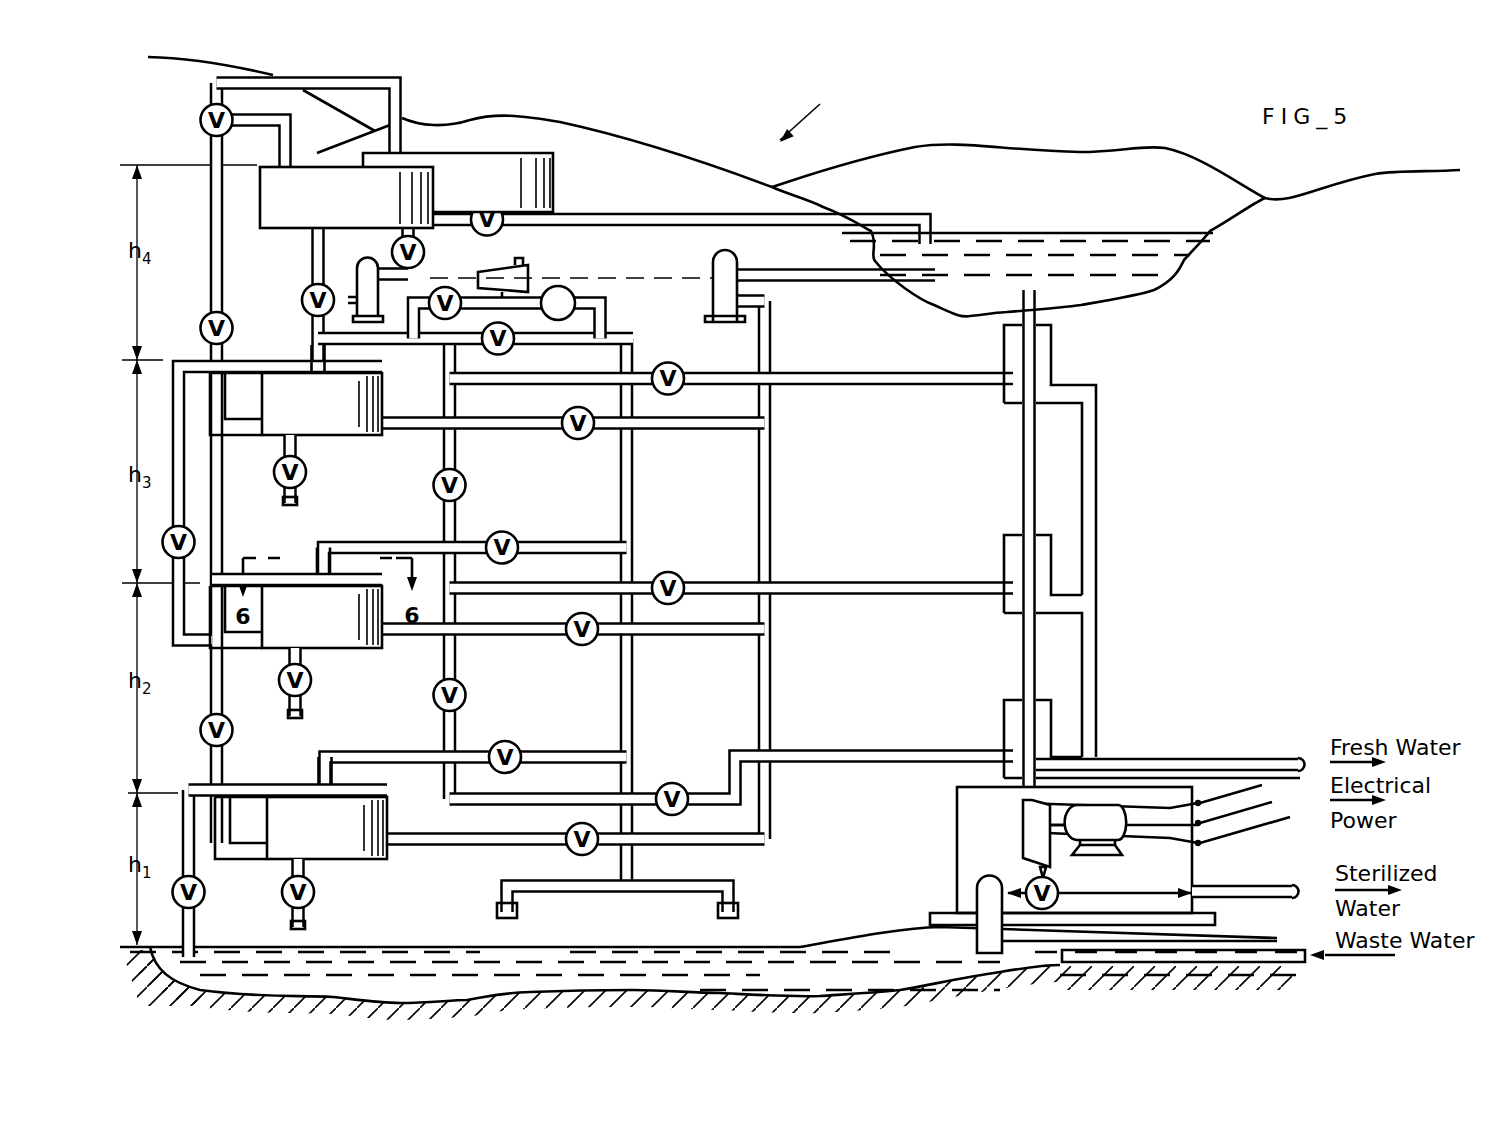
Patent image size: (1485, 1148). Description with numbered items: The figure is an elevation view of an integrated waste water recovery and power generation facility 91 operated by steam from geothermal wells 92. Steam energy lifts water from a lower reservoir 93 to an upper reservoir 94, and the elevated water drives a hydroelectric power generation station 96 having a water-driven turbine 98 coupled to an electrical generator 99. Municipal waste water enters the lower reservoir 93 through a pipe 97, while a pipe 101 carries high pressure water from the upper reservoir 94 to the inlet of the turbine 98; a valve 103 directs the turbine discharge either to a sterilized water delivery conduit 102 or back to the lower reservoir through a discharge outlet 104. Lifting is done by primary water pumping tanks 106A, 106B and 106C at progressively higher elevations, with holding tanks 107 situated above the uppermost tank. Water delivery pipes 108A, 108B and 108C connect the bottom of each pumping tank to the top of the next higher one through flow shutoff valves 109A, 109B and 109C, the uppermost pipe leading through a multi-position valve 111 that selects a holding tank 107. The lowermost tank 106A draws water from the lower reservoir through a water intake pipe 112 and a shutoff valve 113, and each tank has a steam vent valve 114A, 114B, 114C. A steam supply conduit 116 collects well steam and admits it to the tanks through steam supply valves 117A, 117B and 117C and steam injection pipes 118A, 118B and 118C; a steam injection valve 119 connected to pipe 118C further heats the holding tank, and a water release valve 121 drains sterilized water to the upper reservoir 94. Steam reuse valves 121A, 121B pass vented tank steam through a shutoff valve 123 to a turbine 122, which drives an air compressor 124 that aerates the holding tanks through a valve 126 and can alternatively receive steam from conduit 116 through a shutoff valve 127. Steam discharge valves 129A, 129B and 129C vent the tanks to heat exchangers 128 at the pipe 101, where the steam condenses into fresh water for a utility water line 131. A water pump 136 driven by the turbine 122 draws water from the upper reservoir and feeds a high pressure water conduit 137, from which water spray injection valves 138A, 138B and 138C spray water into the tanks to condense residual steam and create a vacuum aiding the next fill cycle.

The integrated waste water recovery and power generation facility 91 is at (814, 118).
The geothermal wells 92 is at (745, 905).
The lower reservoir 93 is at (580, 967).
The upper reservoir 94 is at (1018, 251).
The hydroelectric power generation station 96 is at (957, 812).
The pipe 97 is at (1260, 963).
The water-driven turbine 98 is at (1020, 828).
The electrical generator 99 is at (1120, 843).
The pipe 101 is at (1022, 474).
The sterilized water delivery conduit 102 is at (1262, 884).
The valve 103 is at (1058, 888).
The discharge outlet 104 is at (985, 905).
The lowermost primary water pumping tank 106A is at (288, 824).
The intermediate primary water pumping tank 106B is at (297, 614).
The uppermost primary water pumping tank 106C is at (322, 404).
The holding tank 107 is at (406, 190).
The water delivery pipe 108A is at (230, 767).
The water delivery pipe 108B is at (185, 634).
The water delivery pipe 108C is at (225, 440).
The flow shutoff valve 109A is at (234, 730).
The flow shutoff valve 109B is at (196, 540).
The flow shutoff valve 109C is at (222, 320).
The multi-position valve 111 is at (200, 114).
The water intake pipe 112 is at (197, 927).
The shutoff valve 113 is at (205, 890).
The steam vent valve 114A is at (316, 894).
The steam vent valve 114B is at (312, 678).
The steam vent valve 114C is at (308, 470).
The steam supply conduit 116 is at (634, 700).
The steam supply valve 117A is at (518, 745).
The steam supply valve 117B is at (512, 535).
The steam supply valve 117C is at (508, 348).
The steam injection pipe 118A is at (330, 737).
The steam injection pipe 118B is at (322, 545).
The steam injection pipe 118C is at (312, 352).
The steam injection valve 119 is at (308, 288).
The water release valve 121 is at (480, 206).
The steam reuse valve 121A is at (468, 692).
The steam reuse valve 121B is at (433, 488).
The turbine 122 is at (528, 272).
The shutoff valve 123 is at (440, 318).
The air compressor 124 is at (358, 268).
The valve 126 is at (427, 250).
The shutoff valve 127 is at (572, 292).
The heat exchanger 128 is at (1053, 356).
The steam discharge valve 129A is at (676, 782).
The steam discharge valve 129B is at (678, 576).
The steam discharge valve 129C is at (678, 366).
The utility water line 131 is at (1190, 758).
The water pump 136 is at (718, 256).
The high pressure water conduit 137 is at (772, 480).
The water spray injection valve 138A is at (568, 850).
The water spray injection valve 138B is at (588, 647).
The water spray injection valve 138C is at (584, 440).